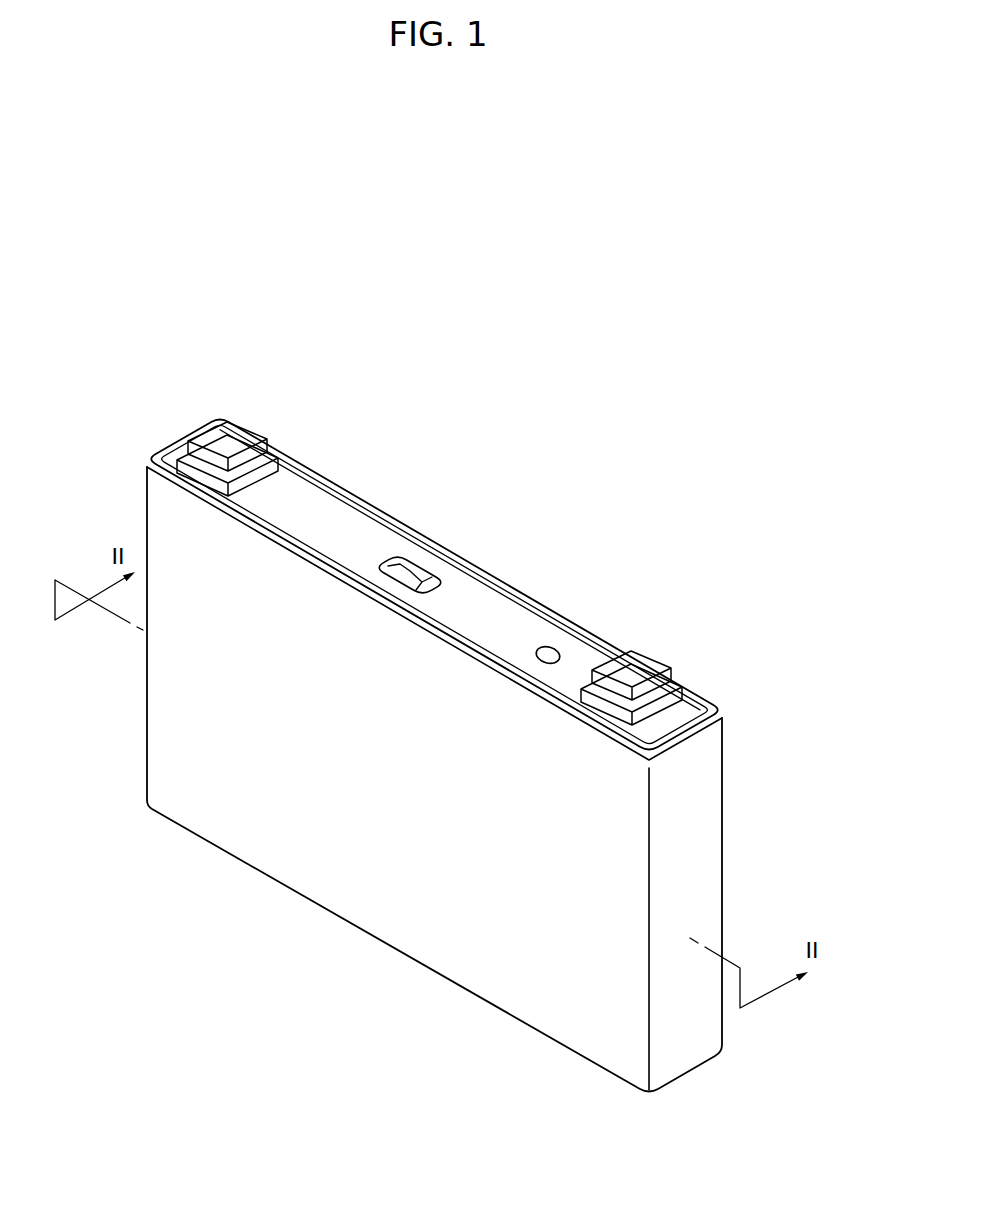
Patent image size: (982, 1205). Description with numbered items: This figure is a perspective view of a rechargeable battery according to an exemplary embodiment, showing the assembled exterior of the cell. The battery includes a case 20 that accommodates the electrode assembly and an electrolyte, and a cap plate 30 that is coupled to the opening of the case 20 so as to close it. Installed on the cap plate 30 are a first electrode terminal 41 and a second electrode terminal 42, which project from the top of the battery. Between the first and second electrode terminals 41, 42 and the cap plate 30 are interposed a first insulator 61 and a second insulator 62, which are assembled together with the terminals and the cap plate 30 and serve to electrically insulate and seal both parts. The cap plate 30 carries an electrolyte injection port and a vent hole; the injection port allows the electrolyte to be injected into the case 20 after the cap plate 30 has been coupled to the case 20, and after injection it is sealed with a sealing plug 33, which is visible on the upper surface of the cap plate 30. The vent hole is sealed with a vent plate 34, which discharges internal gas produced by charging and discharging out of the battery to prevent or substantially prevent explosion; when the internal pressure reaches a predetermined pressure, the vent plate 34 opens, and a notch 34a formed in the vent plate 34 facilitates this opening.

The case 20 is at (345, 893).
The cap plate 30 is at (373, 532).
The sealing plug 33 is at (548, 653).
The vent plate 34 is at (425, 568).
The notch 34a is at (410, 568).
The first electrode terminal 41 is at (677, 675).
The second electrode terminal 42 is at (263, 433).
The first insulator 61 is at (663, 707).
The second insulator 62 is at (275, 458).